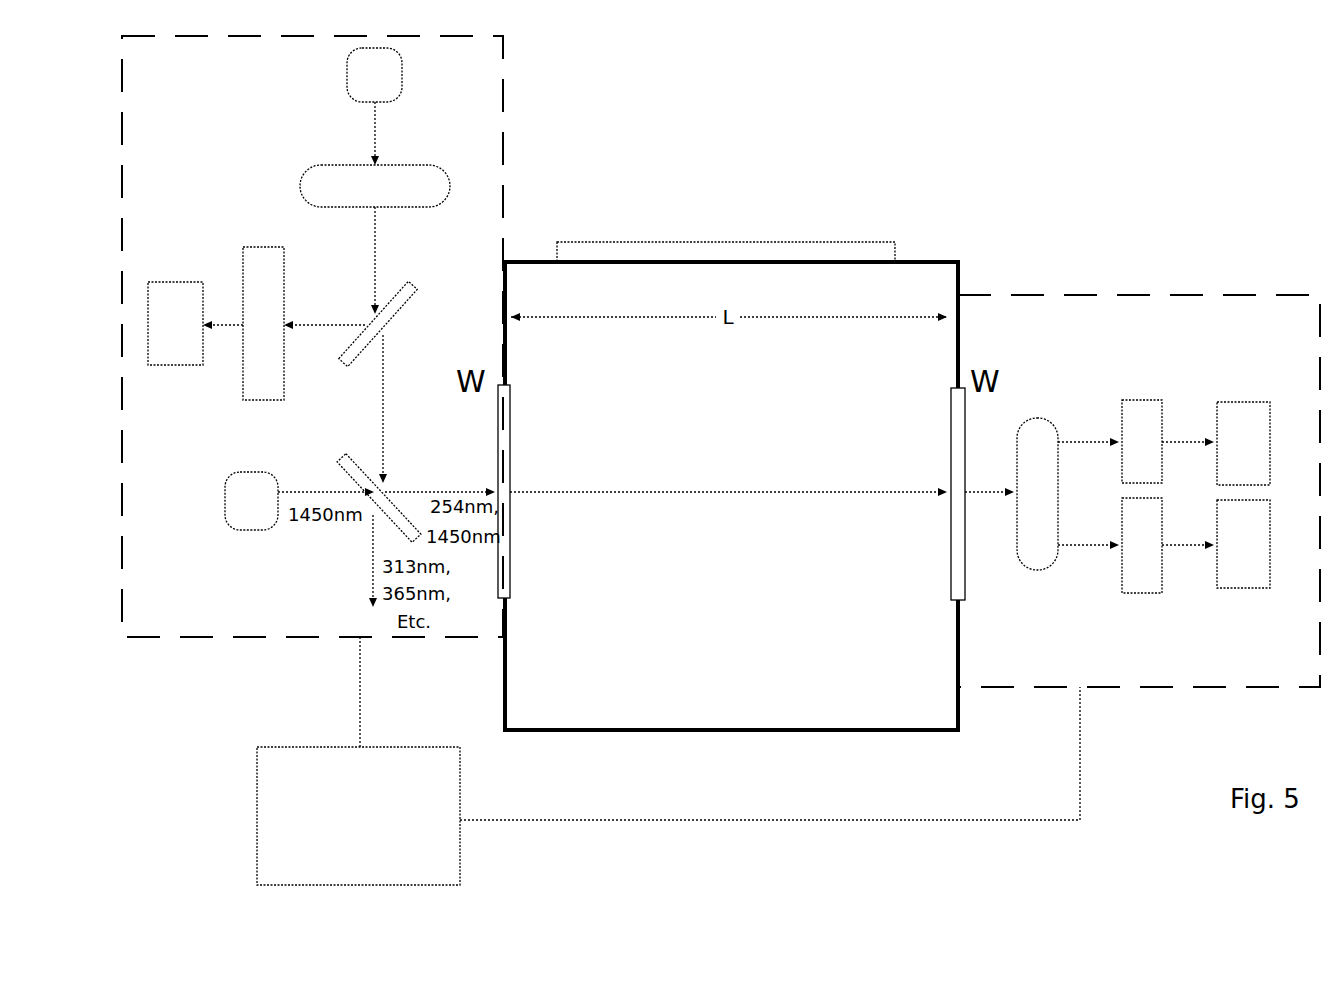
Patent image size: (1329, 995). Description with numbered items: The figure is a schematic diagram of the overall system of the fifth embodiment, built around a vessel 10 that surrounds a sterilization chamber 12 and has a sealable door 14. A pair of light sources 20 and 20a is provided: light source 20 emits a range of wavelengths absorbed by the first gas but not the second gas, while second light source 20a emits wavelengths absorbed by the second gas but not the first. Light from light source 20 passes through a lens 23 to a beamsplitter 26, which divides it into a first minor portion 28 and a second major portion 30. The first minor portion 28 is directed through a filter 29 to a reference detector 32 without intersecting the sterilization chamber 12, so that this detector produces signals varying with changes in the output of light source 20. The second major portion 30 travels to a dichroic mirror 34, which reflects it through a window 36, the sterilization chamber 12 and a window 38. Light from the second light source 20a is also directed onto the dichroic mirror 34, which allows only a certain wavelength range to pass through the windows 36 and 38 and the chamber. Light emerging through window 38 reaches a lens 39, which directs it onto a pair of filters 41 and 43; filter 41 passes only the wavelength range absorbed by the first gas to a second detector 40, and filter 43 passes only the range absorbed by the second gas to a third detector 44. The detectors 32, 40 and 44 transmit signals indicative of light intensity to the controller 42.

The vessel 10 is at (920, 732).
The sterilization chamber 12 is at (731, 496).
The sealable door 14 is at (850, 240).
The light source 20 is at (347, 75).
The second light source 20a is at (225, 497).
The lens 23 is at (310, 167).
The beamsplitter 26 is at (410, 310).
The first minor portion 28 is at (315, 327).
The filter 29 is at (265, 248).
The second major portion 30 is at (390, 465).
The reference detector 32 is at (157, 282).
The dichroic mirror 34 is at (390, 527).
The window 36 is at (513, 407).
The window 38 is at (945, 407).
The lens 39 is at (1037, 418).
The second detector 40 is at (1240, 402).
The filter 41 is at (1142, 400).
The controller 42 is at (252, 777).
The filter 43 is at (1142, 593).
The third detector 44 is at (1240, 588).